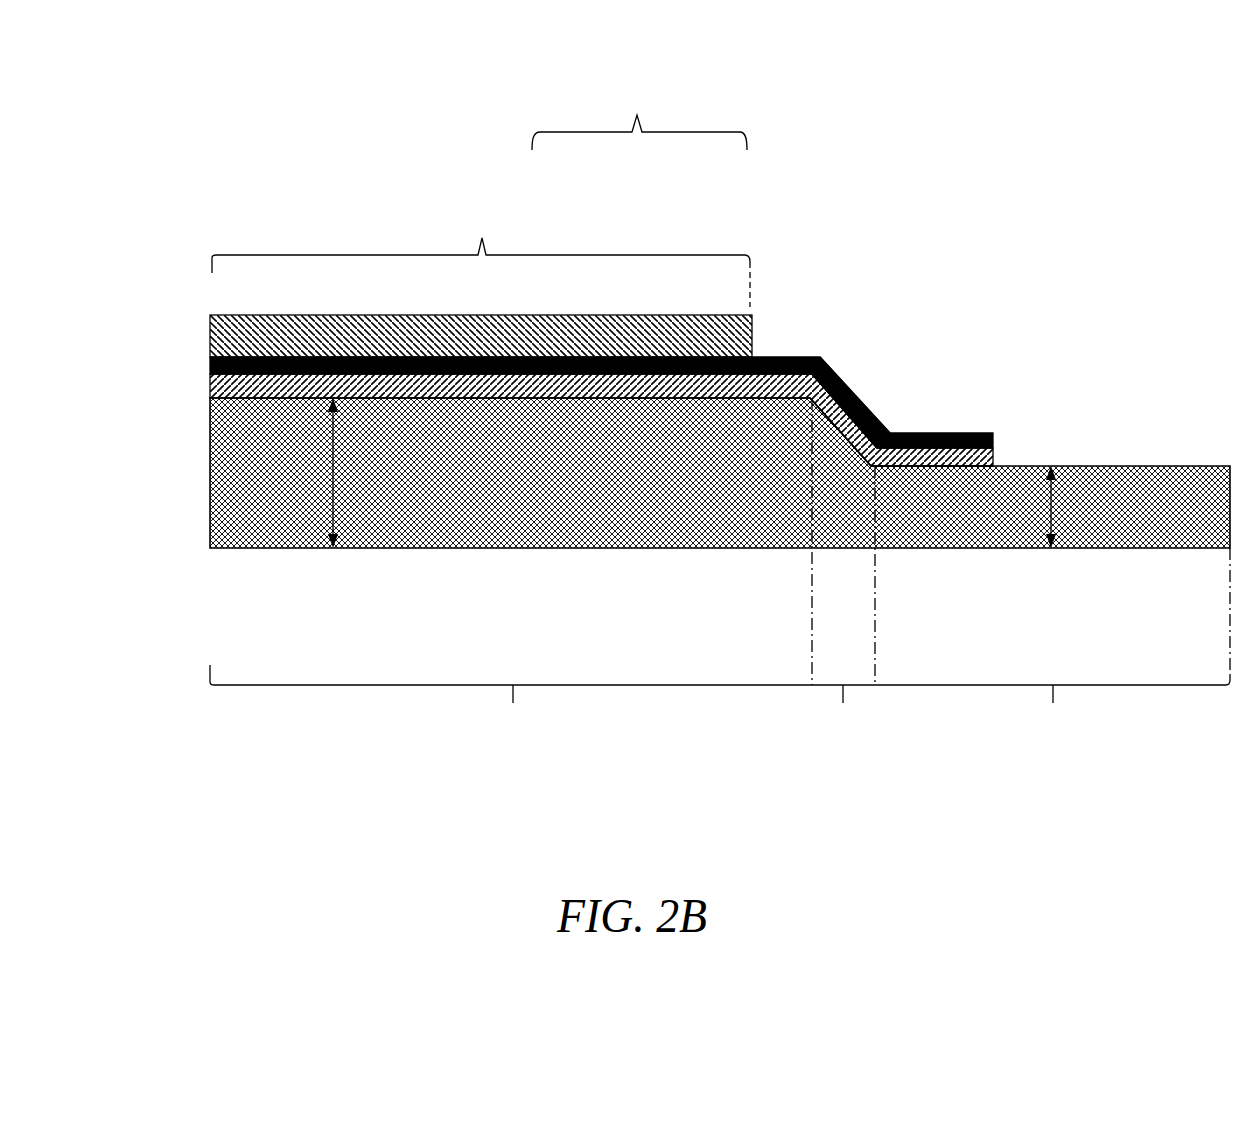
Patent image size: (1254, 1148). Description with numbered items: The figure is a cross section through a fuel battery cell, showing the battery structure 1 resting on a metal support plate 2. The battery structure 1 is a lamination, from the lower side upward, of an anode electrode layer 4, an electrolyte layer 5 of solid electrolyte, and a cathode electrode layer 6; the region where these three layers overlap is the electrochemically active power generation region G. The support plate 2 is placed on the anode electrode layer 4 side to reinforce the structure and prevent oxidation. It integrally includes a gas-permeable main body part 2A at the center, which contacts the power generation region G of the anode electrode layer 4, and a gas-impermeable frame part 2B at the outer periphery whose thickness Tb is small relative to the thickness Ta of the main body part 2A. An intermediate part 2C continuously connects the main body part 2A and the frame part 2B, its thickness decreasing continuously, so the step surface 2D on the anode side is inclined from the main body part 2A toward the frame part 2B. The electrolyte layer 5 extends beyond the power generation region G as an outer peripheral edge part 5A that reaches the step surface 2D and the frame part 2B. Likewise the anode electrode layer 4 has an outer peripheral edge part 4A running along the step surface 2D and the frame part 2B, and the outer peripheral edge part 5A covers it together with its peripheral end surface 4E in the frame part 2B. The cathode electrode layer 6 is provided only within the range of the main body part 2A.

The battery structure 1 is at (639, 105).
The support plate 2 is at (476, 536).
The main body part 2A is at (511, 712).
The frame part 2B is at (1052, 650).
The intermediate part 2C is at (845, 572).
The step surface 2D is at (838, 432).
The anode electrode layer 4 is at (543, 390).
The outer peripheral edge part of the anode electrode layer 4A is at (888, 427).
The peripheral end surface 4E is at (937, 467).
The electrolyte layer 5 is at (617, 368).
The outer peripheral edge part of the electrolyte layer 5A is at (842, 377).
The cathode electrode layer 6 is at (695, 337).
The power generation region G is at (481, 249).
The thickness of the main body part Ta is at (333, 472).
The thickness of the frame part Tb is at (1052, 508).